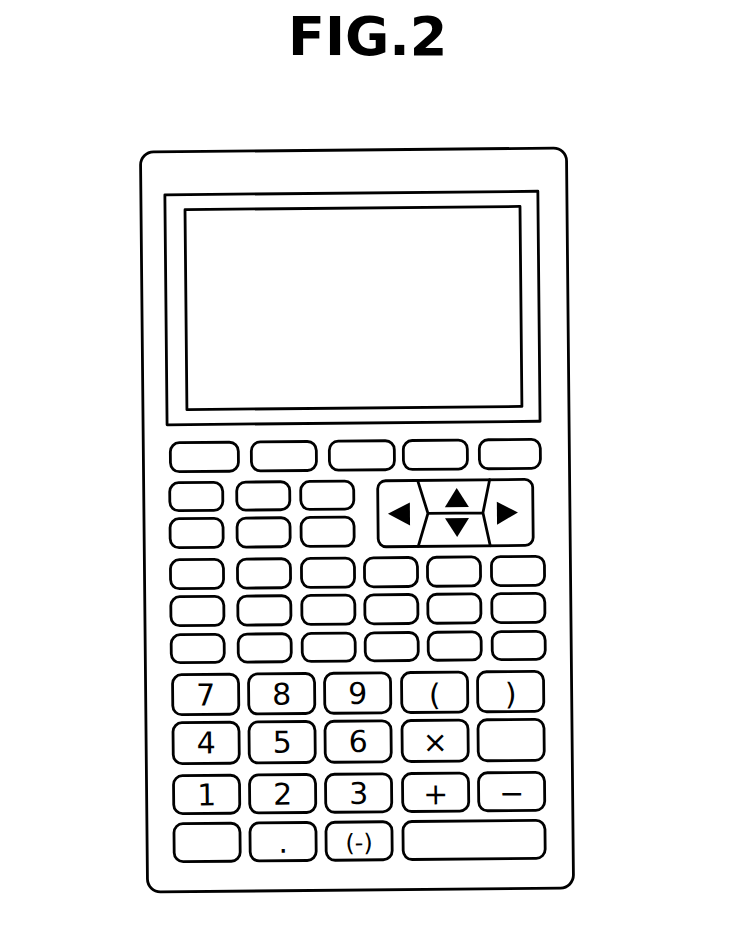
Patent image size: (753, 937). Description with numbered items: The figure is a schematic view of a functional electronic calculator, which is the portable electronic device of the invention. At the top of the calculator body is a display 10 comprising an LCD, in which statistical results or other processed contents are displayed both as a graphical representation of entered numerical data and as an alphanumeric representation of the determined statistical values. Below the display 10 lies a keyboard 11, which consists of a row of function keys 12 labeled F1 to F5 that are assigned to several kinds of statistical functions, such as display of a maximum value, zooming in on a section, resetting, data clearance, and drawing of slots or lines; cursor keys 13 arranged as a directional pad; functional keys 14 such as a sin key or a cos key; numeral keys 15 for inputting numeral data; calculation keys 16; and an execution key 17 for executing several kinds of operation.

The display 10 is at (497, 323).
The keyboard 11 is at (124, 436).
The function keys 12 is at (546, 454).
The cursor keys 13 is at (533, 507).
The functional keys 14 is at (544, 607).
The numeral keys 15 is at (169, 843).
The calculation keys 16 is at (542, 737).
The enter key 17 is at (542, 840).